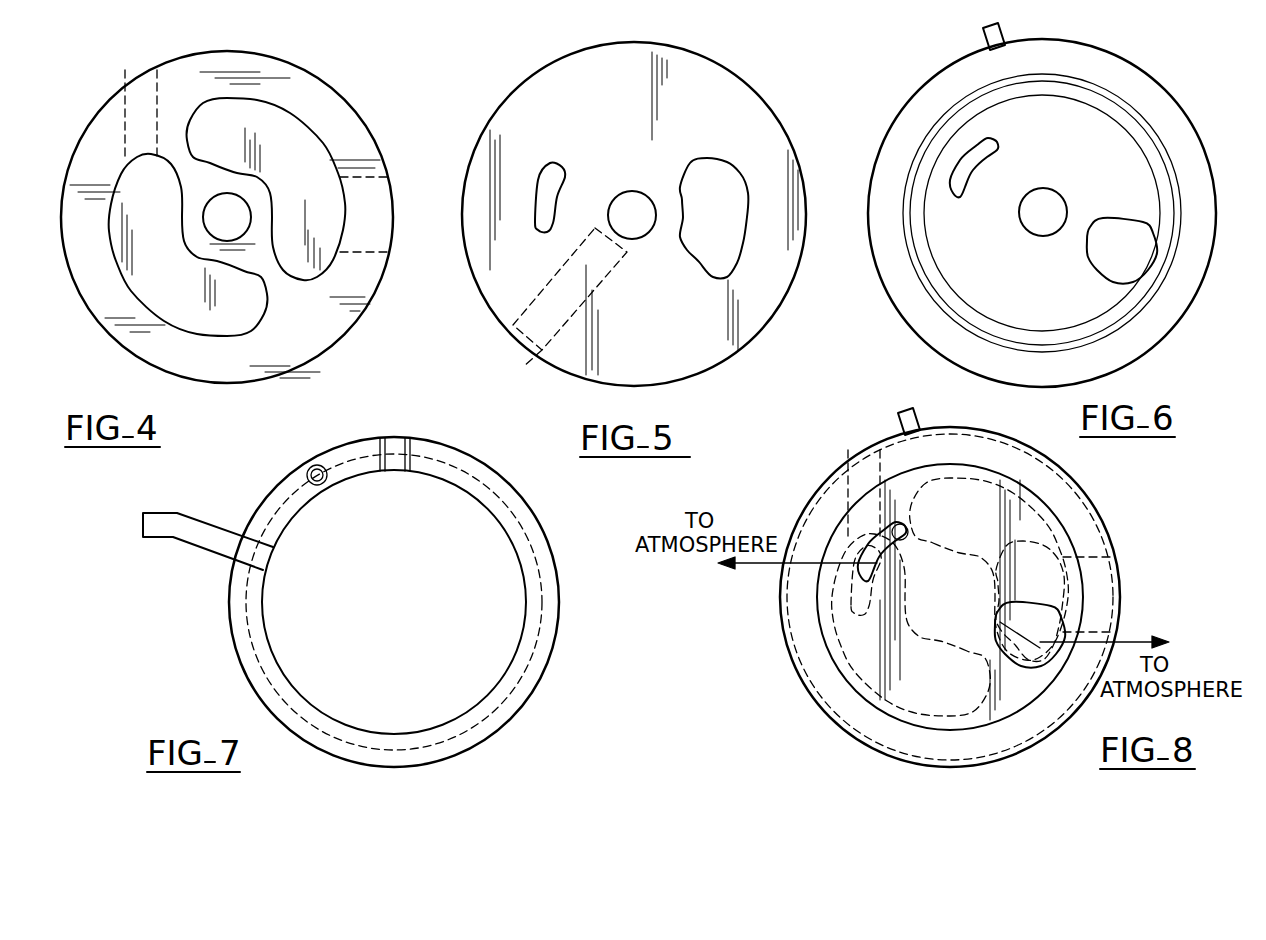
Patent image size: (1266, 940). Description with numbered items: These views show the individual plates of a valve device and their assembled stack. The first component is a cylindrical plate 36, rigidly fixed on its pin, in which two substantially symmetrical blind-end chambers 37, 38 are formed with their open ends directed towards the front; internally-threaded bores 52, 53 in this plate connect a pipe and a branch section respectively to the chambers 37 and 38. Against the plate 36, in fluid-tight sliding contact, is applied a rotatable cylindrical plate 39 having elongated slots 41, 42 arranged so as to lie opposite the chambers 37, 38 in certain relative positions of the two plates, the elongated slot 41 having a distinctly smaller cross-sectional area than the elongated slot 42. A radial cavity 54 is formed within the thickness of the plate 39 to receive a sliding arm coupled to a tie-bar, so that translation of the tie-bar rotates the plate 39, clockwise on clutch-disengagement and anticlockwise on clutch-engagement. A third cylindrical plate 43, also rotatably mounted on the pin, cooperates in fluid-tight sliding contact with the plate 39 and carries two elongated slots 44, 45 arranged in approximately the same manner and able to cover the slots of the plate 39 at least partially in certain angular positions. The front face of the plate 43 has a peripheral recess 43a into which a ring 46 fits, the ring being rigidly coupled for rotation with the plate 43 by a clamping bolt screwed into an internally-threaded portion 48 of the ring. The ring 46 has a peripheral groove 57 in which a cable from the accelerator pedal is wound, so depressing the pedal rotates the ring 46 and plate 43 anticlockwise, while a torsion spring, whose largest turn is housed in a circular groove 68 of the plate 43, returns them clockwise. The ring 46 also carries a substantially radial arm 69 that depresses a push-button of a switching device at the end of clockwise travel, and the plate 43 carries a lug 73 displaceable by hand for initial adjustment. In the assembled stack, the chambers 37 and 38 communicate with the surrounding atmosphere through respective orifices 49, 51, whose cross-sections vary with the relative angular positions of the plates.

In FIG. 4, the cylindrical plate 36 is at (340, 331).
In FIG. 4, the blind-end chamber 37 is at (165, 261).
In FIG. 8, the blind-end chamber 37 is at (845, 688).
In FIG. 4, the blind-end chamber 38 is at (310, 186).
In FIG. 8, the blind-end chamber 38 is at (983, 503).
In FIG. 5, the cylindrical plate 39 is at (516, 96).
In FIG. 5, the elongated slot 41 is at (548, 186).
In FIG. 8, the elongated slot 41 is at (855, 612).
In FIG. 5, the elongated slot 42 is at (708, 248).
In FIG. 8, the elongated slot 42 is at (1065, 545).
In FIG. 6, the cylindrical plate 43 is at (1205, 153).
In FIG. 6, the peripheral recess 43a is at (1140, 334).
In FIG. 6, the elongated slot 44 is at (993, 152).
In FIG. 8, the elongated slot 44 is at (905, 525).
In FIG. 6, the elongated slot 45 is at (1115, 232).
In FIG. 8, the elongated slot 45 is at (1020, 662).
In FIG. 7, the ring 46 is at (543, 675).
In FIG. 7, the internally-threaded portion 48 is at (397, 447).
In FIG. 8, the orifice 49 is at (888, 566).
In FIG. 8, the orifice 51 is at (1000, 622).
In FIG. 4, the internally-threaded bore 52 is at (143, 92).
In FIG. 4, the internally-threaded bore 53 is at (379, 203).
In FIG. 5, the radial cavity 54 is at (559, 306).
In FIG. 7, the peripheral groove 57 is at (553, 590).
In FIG. 6, the circular groove 68 is at (985, 318).
In FIG. 7, the radial arm 69 is at (200, 535).
In FIG. 6, the lug 73 is at (978, 38).
In FIG. 8, the lug 73 is at (909, 421).